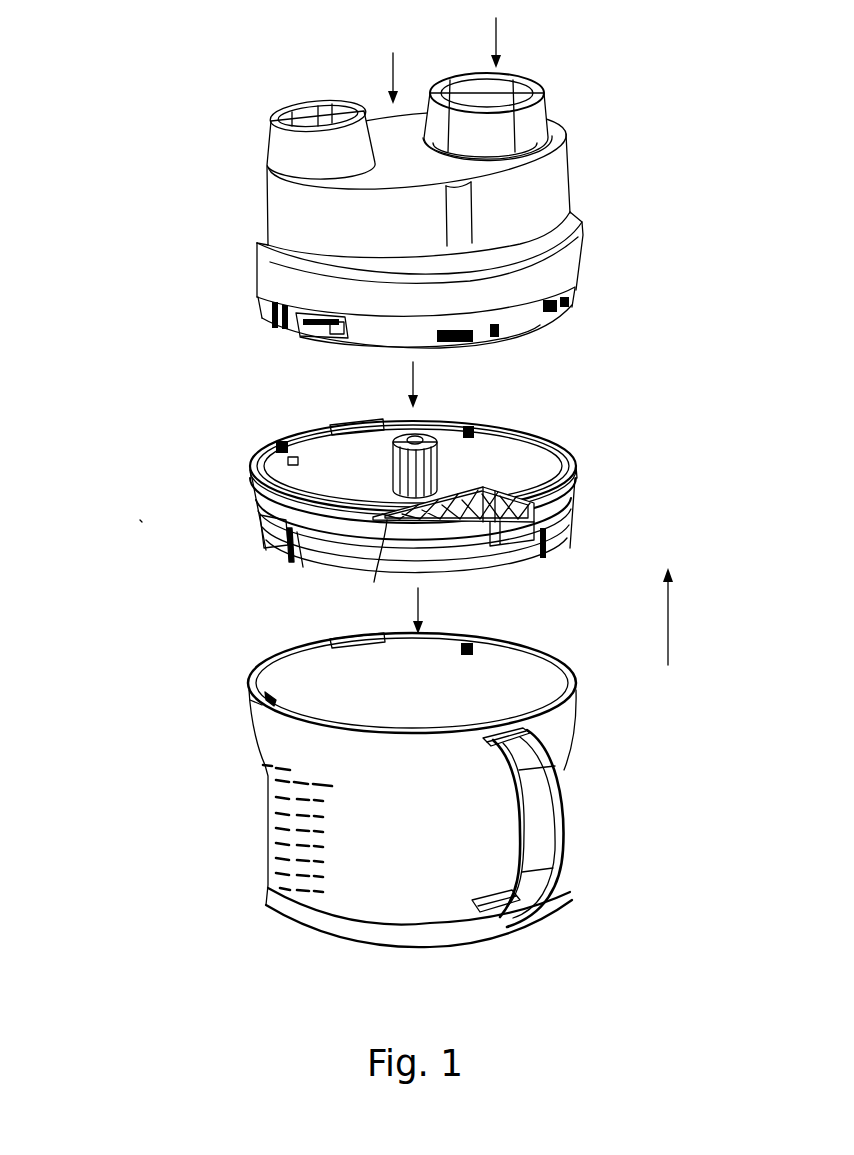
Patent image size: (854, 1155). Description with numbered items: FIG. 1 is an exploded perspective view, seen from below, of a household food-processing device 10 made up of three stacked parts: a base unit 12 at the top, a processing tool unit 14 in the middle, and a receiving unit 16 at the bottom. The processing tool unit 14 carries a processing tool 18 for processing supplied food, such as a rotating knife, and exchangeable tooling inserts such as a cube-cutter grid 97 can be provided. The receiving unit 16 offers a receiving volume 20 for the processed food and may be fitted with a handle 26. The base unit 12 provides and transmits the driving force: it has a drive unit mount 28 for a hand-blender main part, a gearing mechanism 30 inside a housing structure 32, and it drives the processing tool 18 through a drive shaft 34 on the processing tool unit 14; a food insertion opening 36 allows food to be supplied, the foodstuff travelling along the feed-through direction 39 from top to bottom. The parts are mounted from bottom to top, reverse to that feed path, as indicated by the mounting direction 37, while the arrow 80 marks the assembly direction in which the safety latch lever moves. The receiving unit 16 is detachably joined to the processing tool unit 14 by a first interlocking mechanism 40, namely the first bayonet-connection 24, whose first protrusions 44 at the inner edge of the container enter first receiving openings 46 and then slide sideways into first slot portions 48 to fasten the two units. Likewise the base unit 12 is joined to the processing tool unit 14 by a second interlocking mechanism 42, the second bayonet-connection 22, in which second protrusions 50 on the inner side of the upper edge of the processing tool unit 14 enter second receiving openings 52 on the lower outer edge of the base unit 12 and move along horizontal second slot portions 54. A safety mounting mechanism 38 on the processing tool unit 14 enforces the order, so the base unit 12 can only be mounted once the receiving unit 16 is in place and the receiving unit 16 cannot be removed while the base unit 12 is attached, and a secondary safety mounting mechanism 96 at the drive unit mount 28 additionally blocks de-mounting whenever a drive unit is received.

The household food-processing device 10 is at (132, 522).
The base unit 12 is at (622, 210).
The processing tool unit 14 is at (605, 482).
The receiving unit 16 is at (663, 788).
The processing tool 18 is at (500, 488).
The receiving volume 20 is at (540, 685).
The second bayonet-connection 22 is at (296, 380).
The first bayonet-connection 24 is at (265, 690).
The handle 26 is at (568, 808).
The drive unit mount 28 is at (302, 112).
The gearing mechanism 30 is at (258, 206).
The housing structure 32 is at (252, 258).
The drive shaft 34 is at (440, 470).
The food insertion opening 36 is at (520, 96).
The mounting direction 37 is at (668, 612).
The safety mounting mechanism 38 is at (255, 462).
The feed-through direction 39 is at (498, 42).
The first interlocking mechanism 40 is at (563, 565).
The second interlocking mechanism 42 is at (583, 310).
The first protrusions 44 is at (277, 706).
The first receiving openings 46 is at (291, 555).
The first slot portions 48 is at (262, 525).
The second protrusions 50 is at (275, 441).
The second receiving openings 52 is at (338, 332).
The second slot portions 54 is at (310, 327).
The assembly direction 80 is at (392, 85).
The secondary safety mounting mechanism 96 is at (275, 328).
The cube-cutter grid 97 is at (384, 540).